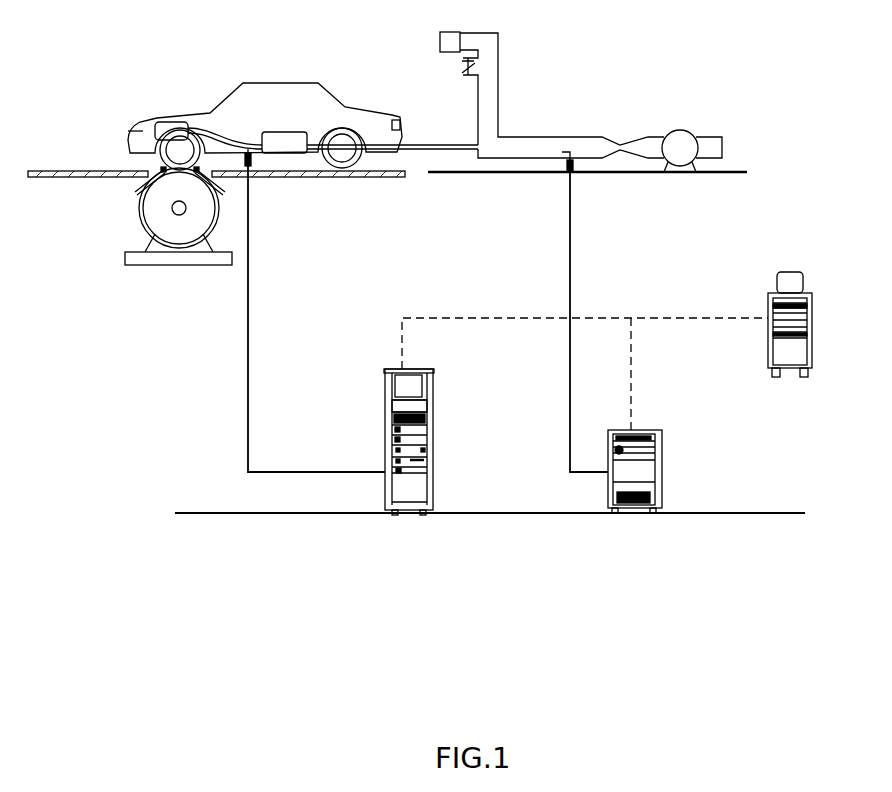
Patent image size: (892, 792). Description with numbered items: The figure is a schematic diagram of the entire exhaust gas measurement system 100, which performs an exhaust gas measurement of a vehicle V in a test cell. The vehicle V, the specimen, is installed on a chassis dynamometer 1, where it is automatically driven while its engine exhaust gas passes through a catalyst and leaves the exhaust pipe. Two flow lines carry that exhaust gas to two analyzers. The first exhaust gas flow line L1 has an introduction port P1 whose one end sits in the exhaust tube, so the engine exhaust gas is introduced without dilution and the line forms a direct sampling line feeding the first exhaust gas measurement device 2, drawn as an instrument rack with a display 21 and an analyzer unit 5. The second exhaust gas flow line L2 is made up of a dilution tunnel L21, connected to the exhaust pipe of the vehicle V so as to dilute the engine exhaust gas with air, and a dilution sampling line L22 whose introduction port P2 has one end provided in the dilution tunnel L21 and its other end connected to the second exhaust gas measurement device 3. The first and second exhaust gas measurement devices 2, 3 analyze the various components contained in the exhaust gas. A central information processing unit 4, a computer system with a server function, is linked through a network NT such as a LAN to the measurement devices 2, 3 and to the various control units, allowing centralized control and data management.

The exhaust gas measurement system 100 is at (150, 63).
The chassis dynamometer 1 is at (120, 190).
The vehicle V is at (277, 82).
The introduction port P1 is at (252, 162).
The first exhaust gas flow line L1 is at (248, 355).
The second exhaust gas flow line L2 is at (482, 253).
The dilution tunnel L21 is at (522, 160).
The dilution sampling line L22 is at (568, 240).
The introduction port P2 is at (577, 168).
The network NT is at (585, 362).
The first exhaust gas measurement device 2 is at (372, 367).
The display 21 is at (395, 387).
The analyzer unit 5 is at (428, 407).
The second exhaust gas measurement device 3 is at (658, 418).
The central information processing unit 4 is at (815, 290).